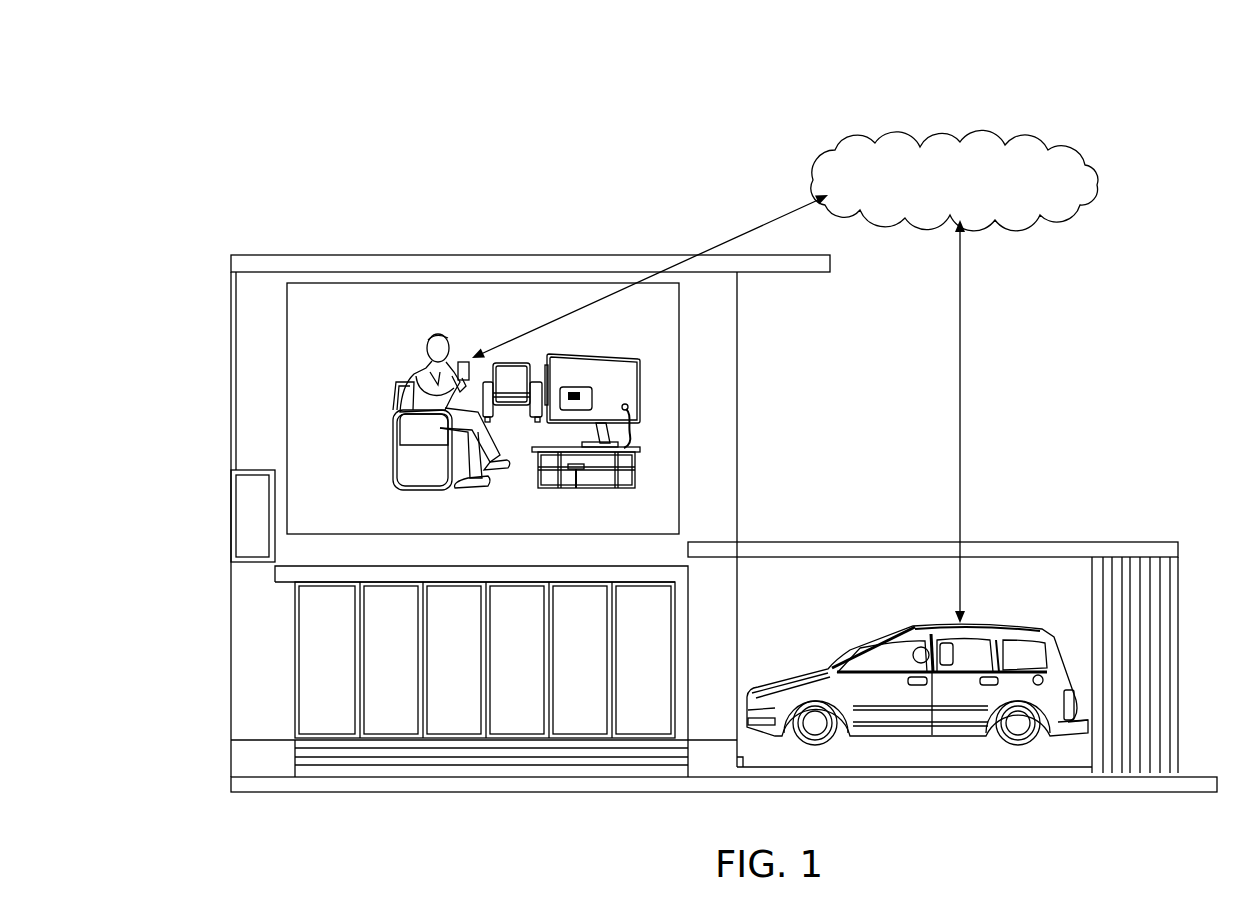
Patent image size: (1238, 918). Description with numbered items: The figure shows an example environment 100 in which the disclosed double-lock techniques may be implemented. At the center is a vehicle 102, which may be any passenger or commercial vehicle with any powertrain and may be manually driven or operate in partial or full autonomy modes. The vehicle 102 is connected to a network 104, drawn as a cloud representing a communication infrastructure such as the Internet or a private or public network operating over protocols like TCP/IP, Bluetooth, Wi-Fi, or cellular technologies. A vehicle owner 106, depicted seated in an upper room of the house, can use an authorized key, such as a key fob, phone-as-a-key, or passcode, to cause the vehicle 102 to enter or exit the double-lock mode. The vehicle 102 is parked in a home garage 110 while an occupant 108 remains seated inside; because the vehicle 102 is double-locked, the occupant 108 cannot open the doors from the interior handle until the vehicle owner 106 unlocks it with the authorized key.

The environment 100 is at (196, 98).
The vehicle 102 is at (782, 670).
The network 104 is at (1097, 176).
The vehicle owner 106 is at (415, 372).
The occupant 108 is at (925, 624).
The home garage 110 is at (824, 570).